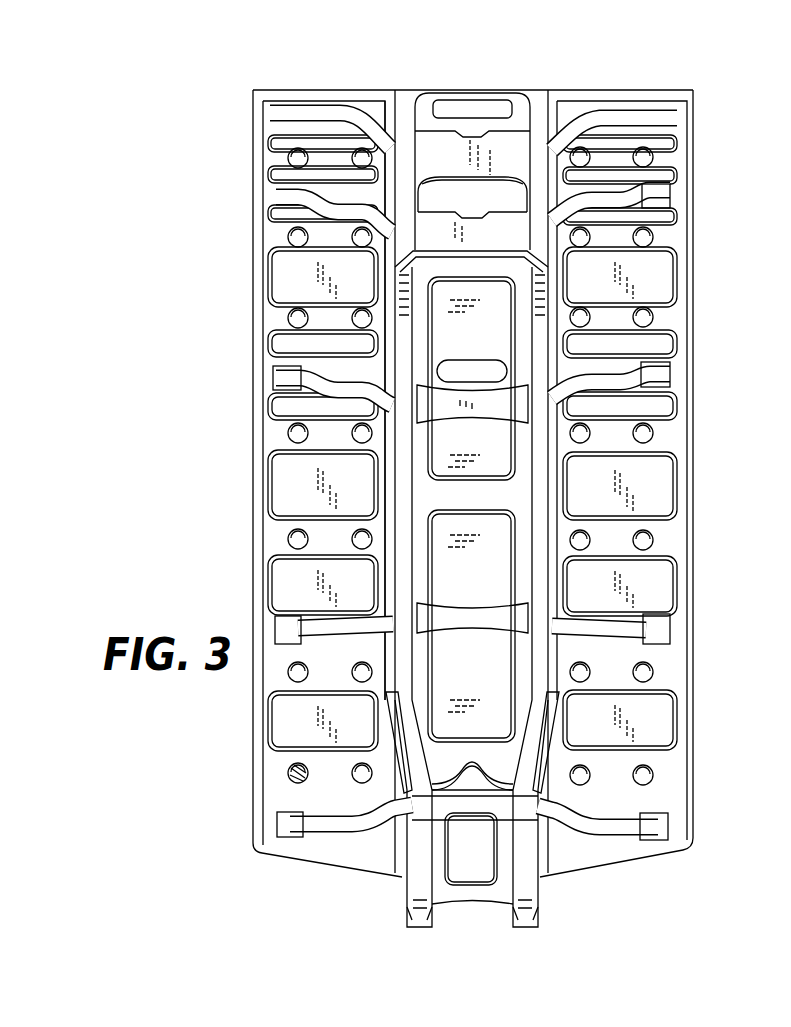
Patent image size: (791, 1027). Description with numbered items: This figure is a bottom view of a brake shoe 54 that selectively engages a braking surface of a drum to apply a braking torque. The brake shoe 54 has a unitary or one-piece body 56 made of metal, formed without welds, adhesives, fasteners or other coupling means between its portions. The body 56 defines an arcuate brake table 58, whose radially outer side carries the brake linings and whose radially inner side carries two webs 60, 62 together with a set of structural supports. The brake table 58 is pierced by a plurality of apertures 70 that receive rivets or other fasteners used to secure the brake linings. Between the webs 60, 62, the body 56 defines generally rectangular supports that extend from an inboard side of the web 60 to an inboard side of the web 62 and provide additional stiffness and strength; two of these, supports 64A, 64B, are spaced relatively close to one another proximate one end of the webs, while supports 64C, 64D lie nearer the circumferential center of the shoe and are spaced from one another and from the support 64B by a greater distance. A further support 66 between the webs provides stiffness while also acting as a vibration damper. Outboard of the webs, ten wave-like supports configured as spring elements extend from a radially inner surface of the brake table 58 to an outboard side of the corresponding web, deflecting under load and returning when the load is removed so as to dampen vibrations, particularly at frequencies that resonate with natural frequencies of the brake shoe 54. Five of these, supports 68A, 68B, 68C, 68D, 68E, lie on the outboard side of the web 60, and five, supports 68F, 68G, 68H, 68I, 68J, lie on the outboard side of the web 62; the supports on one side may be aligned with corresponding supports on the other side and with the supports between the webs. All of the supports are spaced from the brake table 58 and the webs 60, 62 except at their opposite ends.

The brake shoe 54 is at (180, 381).
The body 56 is at (255, 472).
The brake table 58 is at (670, 410).
The web 60 is at (400, 640).
The web 62 is at (545, 625).
The structural support 64A is at (508, 140).
The structural support 64B is at (497, 218).
The structural support 64C is at (497, 395).
The structural support 64D is at (493, 623).
The structural support 66 is at (462, 790).
The structural support 68A is at (291, 112).
The structural support 68B is at (272, 196).
The structural support 68C is at (320, 385).
The structural support 68D is at (315, 630).
The structural support 68E is at (335, 820).
The structural support 68F is at (678, 108).
The structural support 68G is at (675, 190).
The structural support 68H is at (672, 366).
The structural support 68I is at (650, 630).
The structural support 68J is at (652, 822).
The aperture 70 is at (296, 773).